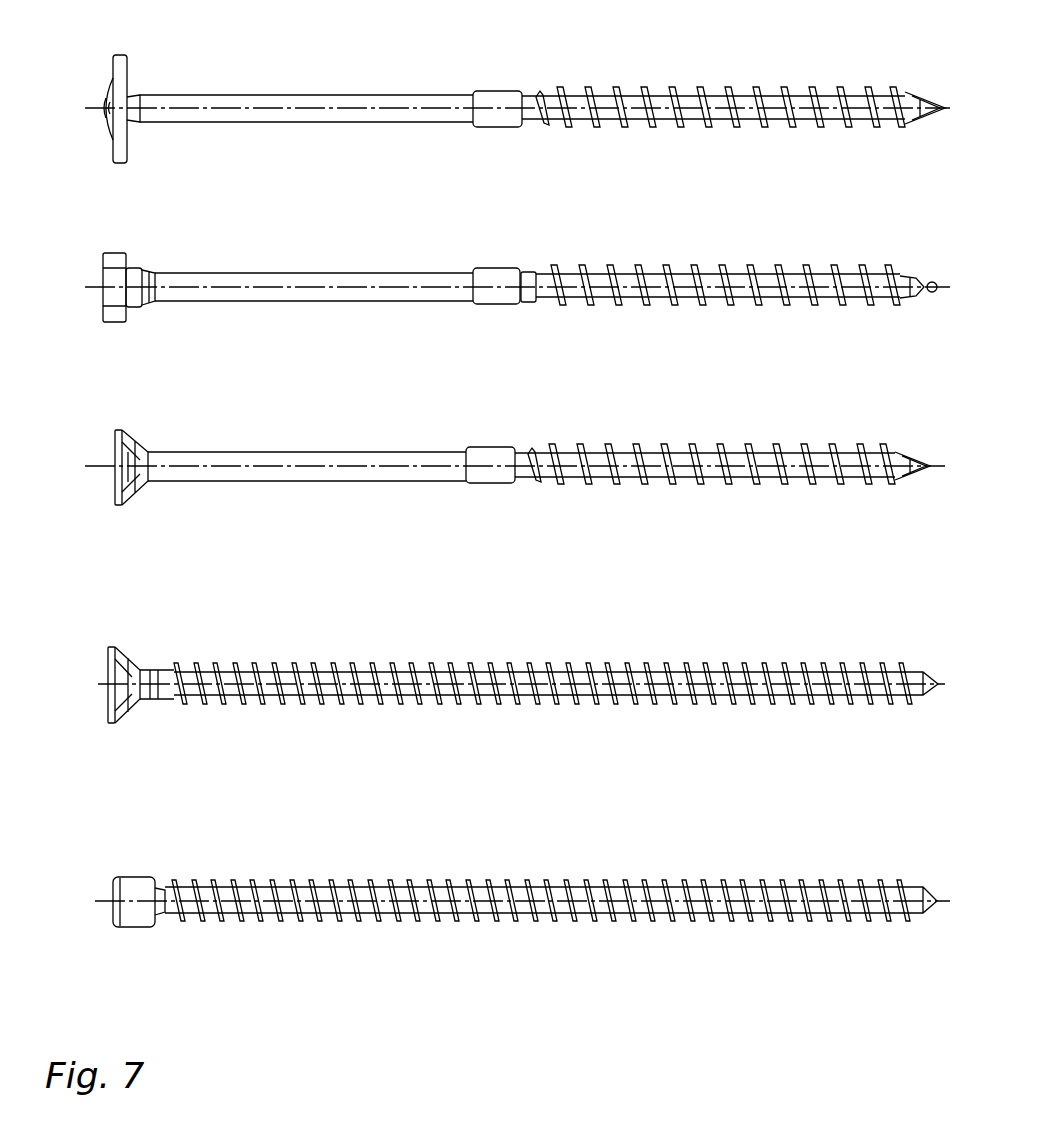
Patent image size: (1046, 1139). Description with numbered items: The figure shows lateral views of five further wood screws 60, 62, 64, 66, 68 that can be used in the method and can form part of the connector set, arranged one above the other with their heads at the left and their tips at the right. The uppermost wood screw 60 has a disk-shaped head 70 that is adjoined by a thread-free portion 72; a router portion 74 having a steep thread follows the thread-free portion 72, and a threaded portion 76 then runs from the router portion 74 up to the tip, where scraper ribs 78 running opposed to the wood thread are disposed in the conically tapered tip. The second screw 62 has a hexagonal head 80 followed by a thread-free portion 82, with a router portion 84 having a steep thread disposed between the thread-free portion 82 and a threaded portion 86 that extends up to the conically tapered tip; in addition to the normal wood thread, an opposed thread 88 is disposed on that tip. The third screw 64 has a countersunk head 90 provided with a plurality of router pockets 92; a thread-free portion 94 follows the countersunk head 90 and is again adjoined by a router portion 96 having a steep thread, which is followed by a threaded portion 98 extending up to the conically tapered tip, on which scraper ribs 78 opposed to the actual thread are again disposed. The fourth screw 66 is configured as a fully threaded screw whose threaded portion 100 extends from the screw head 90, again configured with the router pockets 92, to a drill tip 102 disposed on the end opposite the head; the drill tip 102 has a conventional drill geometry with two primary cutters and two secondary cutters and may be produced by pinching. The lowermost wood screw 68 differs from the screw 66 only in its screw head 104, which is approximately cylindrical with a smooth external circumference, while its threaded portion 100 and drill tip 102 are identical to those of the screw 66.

The wood screw 60 is at (570, 72).
The wood screw 62 is at (548, 246).
The wood screw 64 is at (556, 440).
The screw 66 is at (552, 648).
The wood screw 68 is at (560, 864).
The disk-shaped head 70 is at (134, 78).
The thread-free portion 72 is at (318, 98).
The router portion 74 is at (494, 92).
The threaded portion 76 is at (716, 96).
The scraper ribs 78 is at (922, 122).
The hexagonal head 80 is at (120, 256).
The thread-free portion 82 is at (312, 276).
The router portion 84 is at (496, 267).
The threaded portion 86 is at (712, 272).
The opposed thread 88 is at (905, 274).
The countersunk head 90 is at (134, 434).
The router pockets 92 is at (136, 490).
The thread-free portion 94 is at (330, 452).
The router portion 96 is at (490, 446).
The threaded portion 98 is at (712, 452).
The threaded portion 100 is at (624, 662).
The drill tip 102 is at (920, 664).
The screw head 104 is at (145, 876).